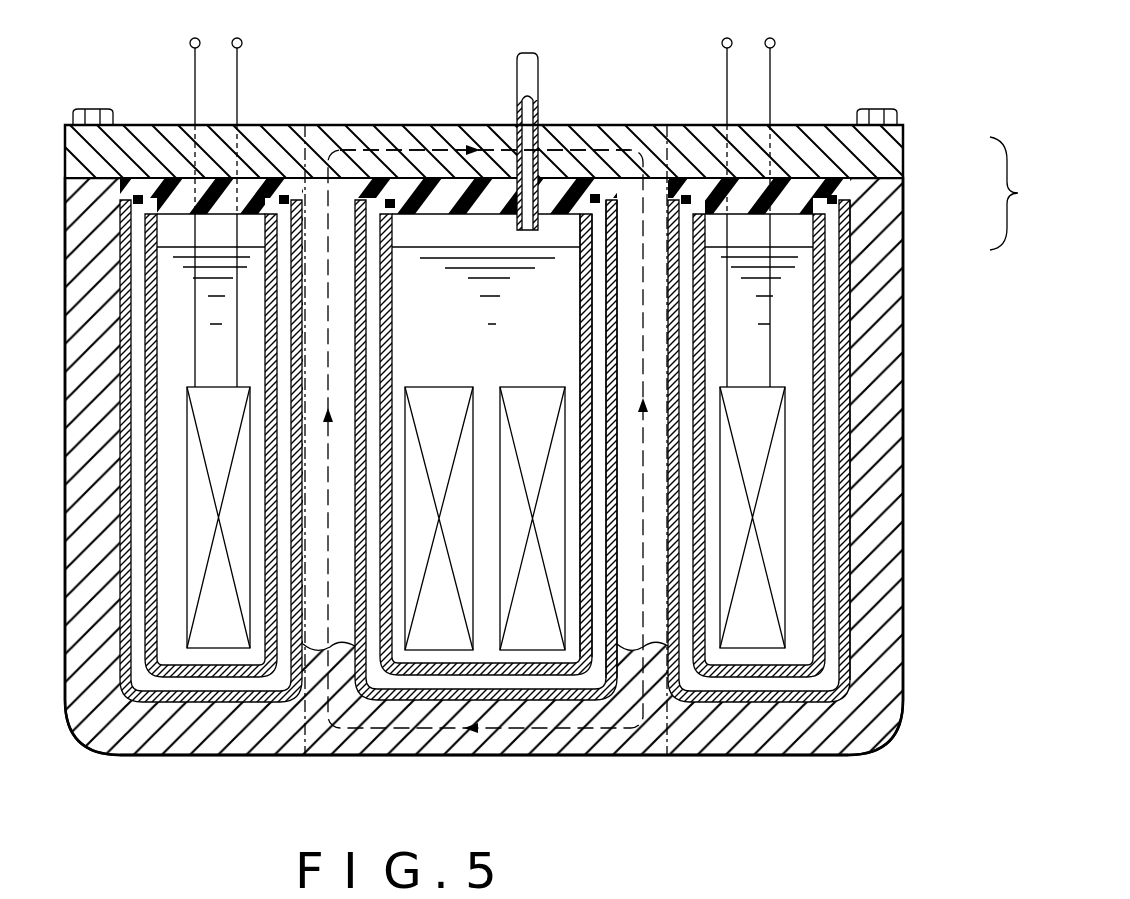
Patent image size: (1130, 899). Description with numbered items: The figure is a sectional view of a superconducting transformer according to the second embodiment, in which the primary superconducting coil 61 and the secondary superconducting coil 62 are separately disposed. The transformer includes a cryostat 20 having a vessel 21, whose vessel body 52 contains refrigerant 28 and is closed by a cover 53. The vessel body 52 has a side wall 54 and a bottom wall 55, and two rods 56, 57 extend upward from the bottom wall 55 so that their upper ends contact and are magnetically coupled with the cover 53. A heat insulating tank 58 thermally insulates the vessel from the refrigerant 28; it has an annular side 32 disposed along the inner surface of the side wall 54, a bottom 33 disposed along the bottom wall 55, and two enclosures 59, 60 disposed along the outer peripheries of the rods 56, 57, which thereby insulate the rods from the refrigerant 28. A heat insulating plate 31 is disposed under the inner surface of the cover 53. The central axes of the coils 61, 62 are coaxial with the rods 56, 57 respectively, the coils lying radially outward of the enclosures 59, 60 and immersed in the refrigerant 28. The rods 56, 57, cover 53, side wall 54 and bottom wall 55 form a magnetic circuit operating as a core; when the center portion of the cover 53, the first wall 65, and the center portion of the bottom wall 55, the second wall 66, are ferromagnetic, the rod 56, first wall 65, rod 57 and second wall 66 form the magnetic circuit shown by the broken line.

The cryostat 20 is at (1000, 275).
The vessel 21 is at (556, 187).
The refrigerant 28 is at (797, 532).
The heat insulating plate 31 is at (795, 200).
The side 32 is at (851, 598).
The bottom 33 is at (806, 700).
The vessel body 52 is at (910, 238).
The cover 53 is at (908, 166).
The side wall 54 is at (908, 410).
The bottom wall 55 is at (752, 756).
The rod 56 is at (340, 338).
The rod 57 is at (630, 342).
The heat insulating tank 58 is at (855, 340).
The enclosure 59 is at (390, 302).
The enclosure 60 is at (578, 308).
The primary superconducting coil 61 is at (218, 636).
The secondary superconducting coil 62 is at (535, 630).
The first wall 65 is at (457, 143).
The second wall 66 is at (433, 746).